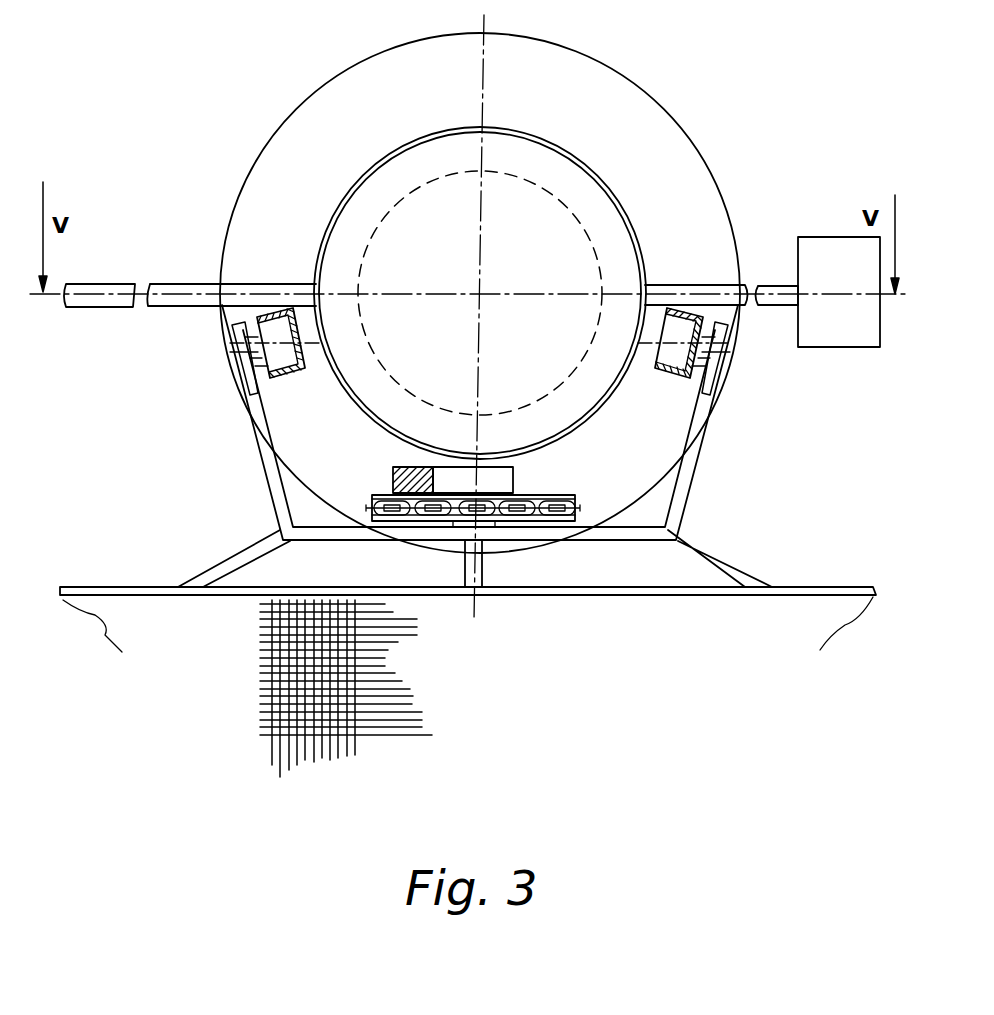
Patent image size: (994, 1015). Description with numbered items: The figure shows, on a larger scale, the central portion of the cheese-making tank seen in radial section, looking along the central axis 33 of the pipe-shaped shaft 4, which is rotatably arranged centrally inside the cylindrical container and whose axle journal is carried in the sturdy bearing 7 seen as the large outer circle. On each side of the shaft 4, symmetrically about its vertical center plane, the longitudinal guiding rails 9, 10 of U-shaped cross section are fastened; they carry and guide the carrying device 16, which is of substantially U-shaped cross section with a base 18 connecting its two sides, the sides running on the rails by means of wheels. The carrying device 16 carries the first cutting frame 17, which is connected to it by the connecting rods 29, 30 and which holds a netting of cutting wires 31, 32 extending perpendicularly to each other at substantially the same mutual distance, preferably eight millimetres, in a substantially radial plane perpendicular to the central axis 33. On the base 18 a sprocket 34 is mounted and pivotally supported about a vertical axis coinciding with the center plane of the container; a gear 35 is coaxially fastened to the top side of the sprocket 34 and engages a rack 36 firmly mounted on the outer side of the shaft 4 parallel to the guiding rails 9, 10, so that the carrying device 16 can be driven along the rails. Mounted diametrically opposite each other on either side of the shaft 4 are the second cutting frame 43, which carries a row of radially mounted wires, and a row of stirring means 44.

The shaft 4 is at (633, 220).
The bearing 7 is at (662, 147).
The guiding rail 9 is at (670, 378).
The guiding rail 10 is at (290, 378).
The carrying device 16 is at (683, 478).
The first cutting frame 17 is at (815, 587).
The base 18 is at (632, 540).
The connecting rod 29 is at (720, 558).
The connecting rod 30 is at (233, 556).
The cutting wire 31 is at (405, 738).
The cutting wire 32 is at (355, 748).
The central axis 33 is at (482, 295).
The sprocket 34 is at (555, 545).
The gear 35 is at (500, 485).
The rack 36 is at (393, 482).
The second cutting frame 43 is at (185, 290).
The stirring means 44 is at (781, 290).